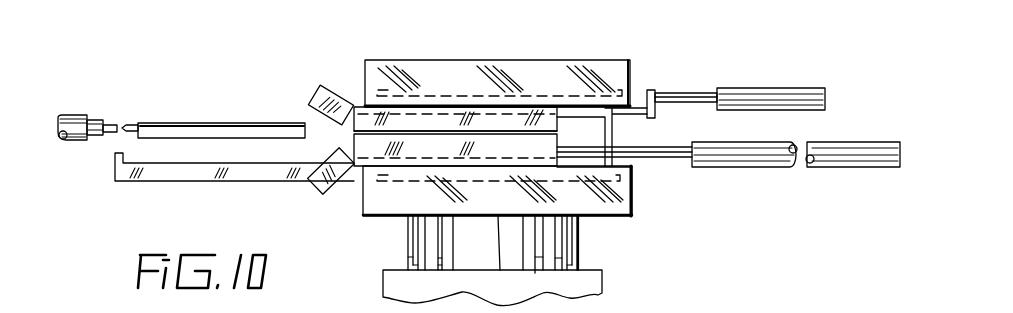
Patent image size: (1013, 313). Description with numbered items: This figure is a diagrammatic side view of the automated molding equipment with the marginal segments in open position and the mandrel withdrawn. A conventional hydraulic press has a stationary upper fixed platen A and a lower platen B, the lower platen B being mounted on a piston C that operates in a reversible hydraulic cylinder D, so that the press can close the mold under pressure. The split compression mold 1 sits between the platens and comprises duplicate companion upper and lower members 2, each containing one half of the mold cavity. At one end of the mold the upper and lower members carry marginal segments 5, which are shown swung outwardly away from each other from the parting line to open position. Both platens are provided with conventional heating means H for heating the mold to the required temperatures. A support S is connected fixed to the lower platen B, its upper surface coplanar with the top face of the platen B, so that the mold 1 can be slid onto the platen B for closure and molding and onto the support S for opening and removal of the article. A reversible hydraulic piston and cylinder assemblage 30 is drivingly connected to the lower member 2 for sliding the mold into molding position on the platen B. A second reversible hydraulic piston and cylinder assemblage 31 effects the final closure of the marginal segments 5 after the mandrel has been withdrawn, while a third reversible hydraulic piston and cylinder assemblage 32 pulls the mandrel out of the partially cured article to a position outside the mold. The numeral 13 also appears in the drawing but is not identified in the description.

The upper fixed platen A is at (604, 62).
The lower platen B is at (625, 200).
The piston C is at (578, 251).
The reversible hydraulic cylinder D is at (598, 292).
The heating means H is at (455, 96).
The compression mold 1 is at (357, 102).
The mold members 2 is at (356, 140).
The marginal segments 5 is at (318, 92).
The support S is at (197, 172).
The frame 13 is at (390, 312).
The reversible hydraulic piston and cylinder assemblage 30 is at (750, 168).
The reversible hydraulic piston and cylinder assemblage 31 is at (763, 88).
The reversible hydraulic piston and cylinder assemblage 32 is at (78, 115).